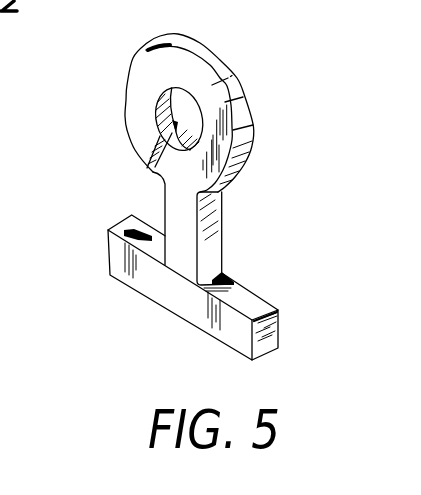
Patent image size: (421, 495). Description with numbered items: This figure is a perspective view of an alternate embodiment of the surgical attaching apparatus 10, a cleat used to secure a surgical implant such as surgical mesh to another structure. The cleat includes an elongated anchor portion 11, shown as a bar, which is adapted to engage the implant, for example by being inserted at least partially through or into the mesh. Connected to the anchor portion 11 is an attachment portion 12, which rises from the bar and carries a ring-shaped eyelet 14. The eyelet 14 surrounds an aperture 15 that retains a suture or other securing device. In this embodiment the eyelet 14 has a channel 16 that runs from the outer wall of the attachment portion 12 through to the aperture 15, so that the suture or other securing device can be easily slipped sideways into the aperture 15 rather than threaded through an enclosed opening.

The surgical attaching apparatus 10 is at (262, 59).
The anchor portion 11 is at (289, 294).
The attachment portion 12 is at (271, 131).
The eyelet 14 is at (146, 77).
The aperture 15 is at (186, 107).
The channel 16 is at (150, 172).